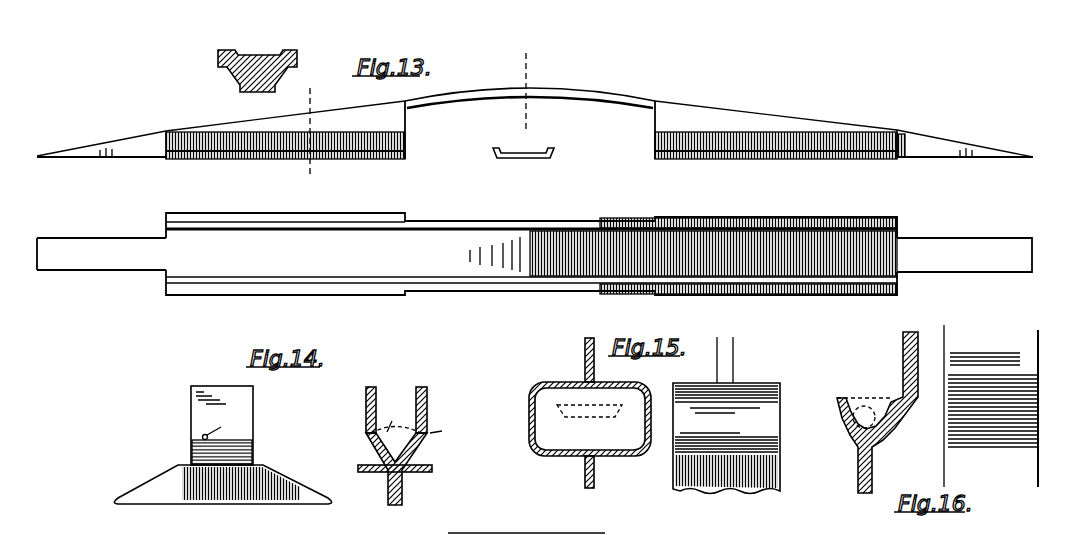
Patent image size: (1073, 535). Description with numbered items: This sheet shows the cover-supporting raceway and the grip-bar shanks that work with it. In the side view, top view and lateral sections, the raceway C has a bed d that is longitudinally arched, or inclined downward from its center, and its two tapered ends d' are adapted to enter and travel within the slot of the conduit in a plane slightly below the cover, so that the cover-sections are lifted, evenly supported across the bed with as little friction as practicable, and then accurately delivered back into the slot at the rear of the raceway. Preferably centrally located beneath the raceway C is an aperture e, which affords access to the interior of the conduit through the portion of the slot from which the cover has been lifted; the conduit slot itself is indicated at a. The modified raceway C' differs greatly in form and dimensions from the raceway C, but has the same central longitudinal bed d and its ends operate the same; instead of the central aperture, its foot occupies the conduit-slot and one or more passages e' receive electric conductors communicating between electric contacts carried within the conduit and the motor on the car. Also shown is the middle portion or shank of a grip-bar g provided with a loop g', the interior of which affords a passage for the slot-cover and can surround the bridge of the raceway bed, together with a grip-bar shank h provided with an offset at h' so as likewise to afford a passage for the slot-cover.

In FIG. 13, the cover-supporting raceway C is at (531, 167).
In FIG. 14, the raceway C' is at (284, 445).
In FIG. 13, the bed of the raceway d is at (530, 122).
In FIG. 13, the ends of the raceway bed d' is at (535, 186).
In FIG. 13, the aperture e is at (594, 126).
In FIG. 14, the passages e' is at (330, 427).
In FIG. 13, the rail a is at (530, 245).
In FIG. 14, the rail a is at (391, 417).
In FIG. 15, the rail a is at (526, 522).
In FIG. 15, the grip-bar g is at (654, 415).
In FIG. 15, the loop g' is at (667, 437).
In FIG. 16, the grip-bar shank h is at (937, 409).
In FIG. 16, the offset h' is at (864, 401).